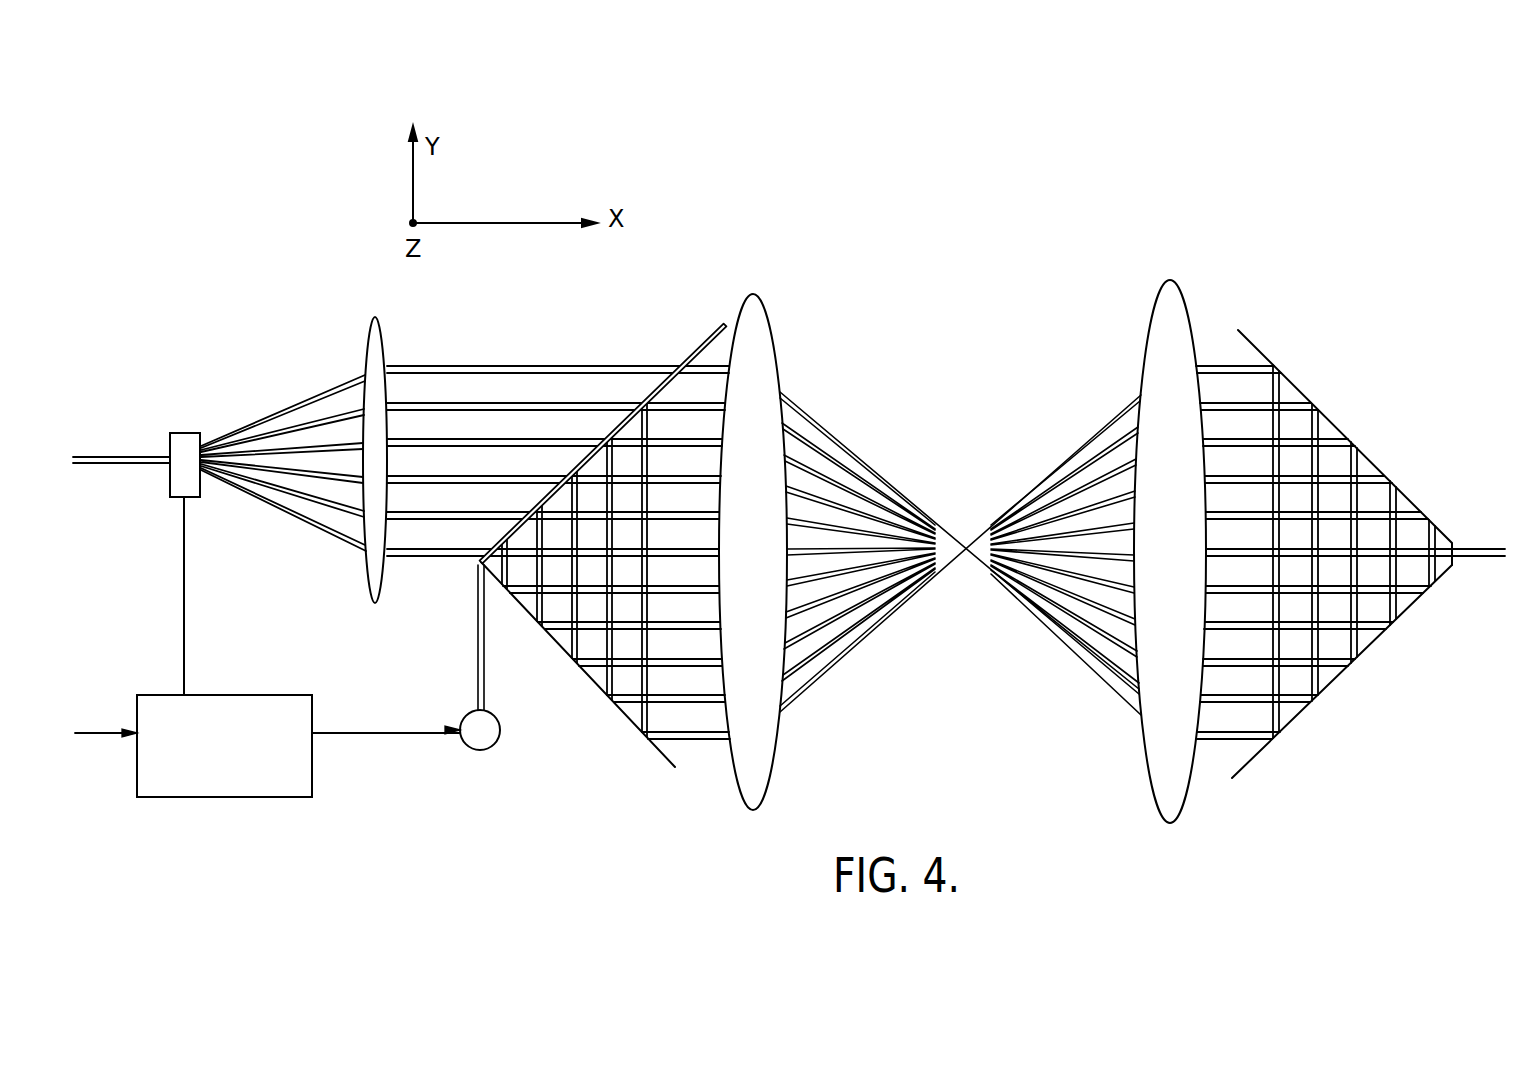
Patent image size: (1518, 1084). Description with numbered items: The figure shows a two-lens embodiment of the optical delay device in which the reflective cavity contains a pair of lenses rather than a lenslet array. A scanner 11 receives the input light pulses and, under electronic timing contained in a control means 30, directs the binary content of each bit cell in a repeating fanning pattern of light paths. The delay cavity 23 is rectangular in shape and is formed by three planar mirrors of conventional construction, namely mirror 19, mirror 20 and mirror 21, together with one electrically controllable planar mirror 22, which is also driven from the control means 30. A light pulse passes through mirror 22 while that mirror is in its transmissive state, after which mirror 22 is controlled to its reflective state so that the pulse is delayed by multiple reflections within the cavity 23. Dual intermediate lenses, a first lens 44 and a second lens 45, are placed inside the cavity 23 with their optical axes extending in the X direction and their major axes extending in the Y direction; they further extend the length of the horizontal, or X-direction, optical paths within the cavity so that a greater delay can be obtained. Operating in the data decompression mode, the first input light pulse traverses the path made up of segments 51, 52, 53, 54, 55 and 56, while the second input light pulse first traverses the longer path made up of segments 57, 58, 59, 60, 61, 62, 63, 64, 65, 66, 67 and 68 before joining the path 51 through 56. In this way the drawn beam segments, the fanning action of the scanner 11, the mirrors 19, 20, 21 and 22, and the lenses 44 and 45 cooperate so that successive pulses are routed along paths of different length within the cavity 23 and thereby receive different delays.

The scanner 11 is at (183, 447).
The light path segment 51 is at (303, 523).
The light path segment 57 is at (340, 507).
The light path segment 52 is at (433, 553).
The light path segment 58 is at (425, 512).
The control means 30 is at (160, 695).
The light path segment 68 is at (507, 575).
The planar mirror 21 is at (625, 579).
The light path segment 59 is at (707, 508).
The light path segment 53 is at (690, 557).
The light path segment 67 is at (623, 592).
The electrically controllable planar mirror 22 is at (692, 350).
The lens 44 is at (762, 340).
The light path segment 60 is at (842, 552).
The light path segment 54 is at (790, 538).
The light path segment 66 is at (790, 563).
The optical delay cavity 23 is at (963, 352).
The light path segment 61 is at (1084, 558).
The light path segment 65 is at (1107, 530).
The light path segment 55 is at (1107, 567).
The lens 45 is at (1180, 322).
The planar mirror 19 is at (1297, 534).
The light path segment 64 is at (1240, 510).
The light path segment 56 is at (1240, 560).
The light path segment 62 is at (1240, 597).
The planar mirror 20 is at (1332, 687).
The light path segment 63 is at (1440, 572).